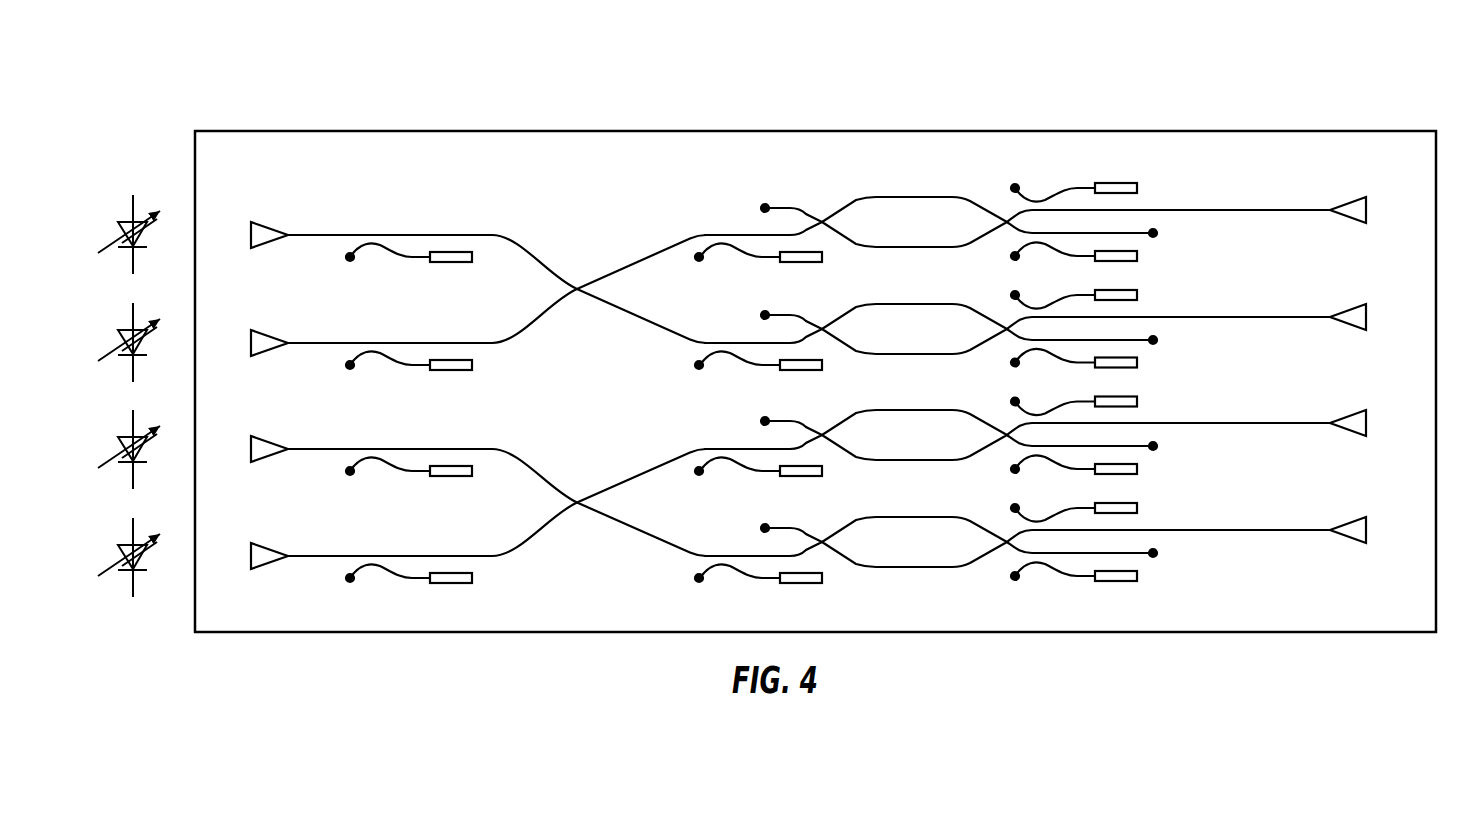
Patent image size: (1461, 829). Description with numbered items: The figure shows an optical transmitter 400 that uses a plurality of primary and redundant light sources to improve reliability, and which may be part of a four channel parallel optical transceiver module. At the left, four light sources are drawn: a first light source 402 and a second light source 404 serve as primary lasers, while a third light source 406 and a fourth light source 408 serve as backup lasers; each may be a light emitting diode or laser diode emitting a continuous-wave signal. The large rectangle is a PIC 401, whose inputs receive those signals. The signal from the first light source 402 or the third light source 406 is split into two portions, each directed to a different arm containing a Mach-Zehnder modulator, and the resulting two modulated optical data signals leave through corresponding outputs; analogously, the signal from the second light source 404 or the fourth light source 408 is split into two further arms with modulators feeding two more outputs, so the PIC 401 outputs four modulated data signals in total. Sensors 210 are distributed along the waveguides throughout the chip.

The optical transmitter 400 is at (1375, 68).
The PIC 401 is at (1387, 131).
The first light source 402 is at (124, 191).
The second light source 404 is at (124, 406).
The third light source 406 is at (124, 299).
The fourth light source 408 is at (124, 514).
The sensor 210 is at (452, 262).